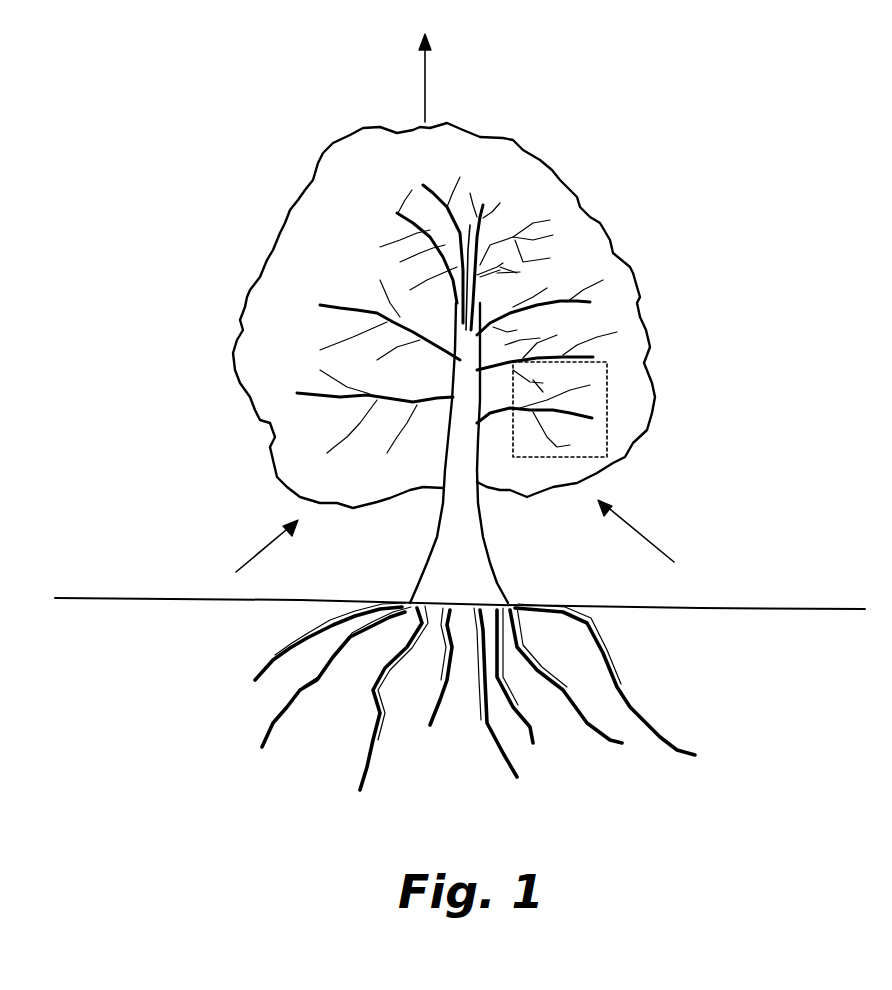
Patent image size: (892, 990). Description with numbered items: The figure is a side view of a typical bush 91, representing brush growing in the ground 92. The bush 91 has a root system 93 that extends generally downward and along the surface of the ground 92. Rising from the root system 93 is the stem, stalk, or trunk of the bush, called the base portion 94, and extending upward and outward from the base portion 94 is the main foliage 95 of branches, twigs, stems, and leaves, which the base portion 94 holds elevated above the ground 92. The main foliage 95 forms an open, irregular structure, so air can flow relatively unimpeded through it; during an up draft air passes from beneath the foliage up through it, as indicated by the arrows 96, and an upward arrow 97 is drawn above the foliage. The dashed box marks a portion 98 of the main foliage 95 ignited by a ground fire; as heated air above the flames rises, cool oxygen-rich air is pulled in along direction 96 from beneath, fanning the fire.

The bush 91 is at (250, 243).
The ground 92 is at (146, 692).
The root system 93 is at (668, 743).
The base portion 94 is at (497, 588).
The main foliage 95 is at (610, 240).
The arrow indicating air flow direction 96 is at (453, 545).
The transpiration flow 97 is at (439, 78).
The ignited portion of the main foliage 98 is at (610, 401).